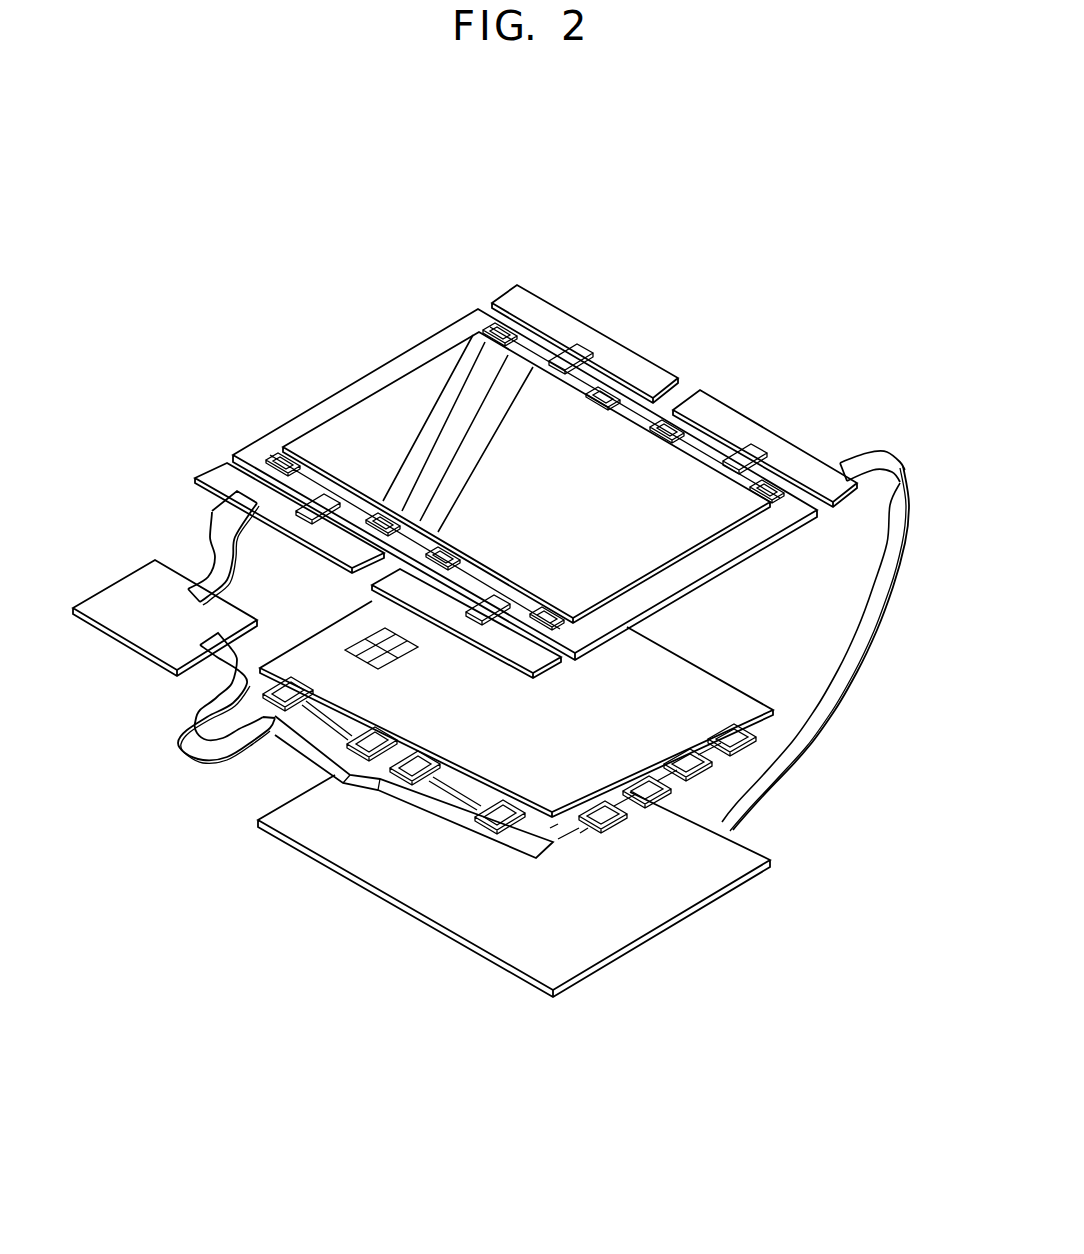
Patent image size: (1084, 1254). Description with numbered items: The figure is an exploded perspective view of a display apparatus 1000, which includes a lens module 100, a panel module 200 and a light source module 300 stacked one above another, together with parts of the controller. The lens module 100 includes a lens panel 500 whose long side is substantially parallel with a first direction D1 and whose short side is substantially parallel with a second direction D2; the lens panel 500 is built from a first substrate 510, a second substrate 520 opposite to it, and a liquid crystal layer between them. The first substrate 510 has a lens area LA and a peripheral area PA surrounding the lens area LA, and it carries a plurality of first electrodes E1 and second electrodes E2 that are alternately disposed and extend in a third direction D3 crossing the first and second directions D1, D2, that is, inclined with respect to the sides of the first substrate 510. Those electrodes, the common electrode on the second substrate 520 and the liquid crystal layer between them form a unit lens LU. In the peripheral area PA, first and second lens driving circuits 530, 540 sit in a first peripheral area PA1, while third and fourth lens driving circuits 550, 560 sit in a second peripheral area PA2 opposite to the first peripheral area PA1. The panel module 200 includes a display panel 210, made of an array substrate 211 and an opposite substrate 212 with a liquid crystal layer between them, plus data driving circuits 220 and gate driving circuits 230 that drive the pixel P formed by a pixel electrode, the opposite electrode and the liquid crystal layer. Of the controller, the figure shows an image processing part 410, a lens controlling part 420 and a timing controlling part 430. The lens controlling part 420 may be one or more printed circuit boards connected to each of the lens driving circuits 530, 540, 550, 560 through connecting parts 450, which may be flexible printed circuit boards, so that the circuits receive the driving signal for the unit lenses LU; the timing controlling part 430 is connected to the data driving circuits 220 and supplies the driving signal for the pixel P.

The display apparatus 1000 is at (412, 208).
The lens module 100 is at (520, 486).
The panel module 200 is at (575, 817).
The light source module 300 is at (777, 860).
The display panel 210 is at (638, 936).
The array substrate 211 is at (550, 828).
The opposite substrate 212 is at (580, 833).
The data driving circuits 220 is at (487, 827).
The gate driving circuits 230 is at (627, 820).
The image processing part 410 is at (135, 585).
The lens controlling part 420 is at (735, 402).
The timing controlling part 430 is at (430, 800).
The connecting parts 450 is at (872, 455).
The lens panel 500 is at (812, 598).
The first substrate 510 is at (703, 583).
The second substrate 520 is at (727, 533).
The first lens driving circuit 530 is at (533, 370).
The second lens driving circuit 540 is at (700, 462).
The third lens driving circuit 550 is at (330, 485).
The fourth lens driving circuit 560 is at (490, 588).
The pixel P is at (373, 647).
The peripheral area PA is at (797, 520).
The first peripheral area PA1 is at (468, 325).
The second peripheral area PA2 is at (597, 630).
The lens area LA is at (387, 426).
The unit lens LU is at (423, 510).
The first electrodes E1 is at (455, 378).
The second electrodes E2 is at (440, 428).
The first direction D1 is at (267, 1032).
The second direction D2 is at (267, 1032).
The third direction D3 is at (267, 1032).